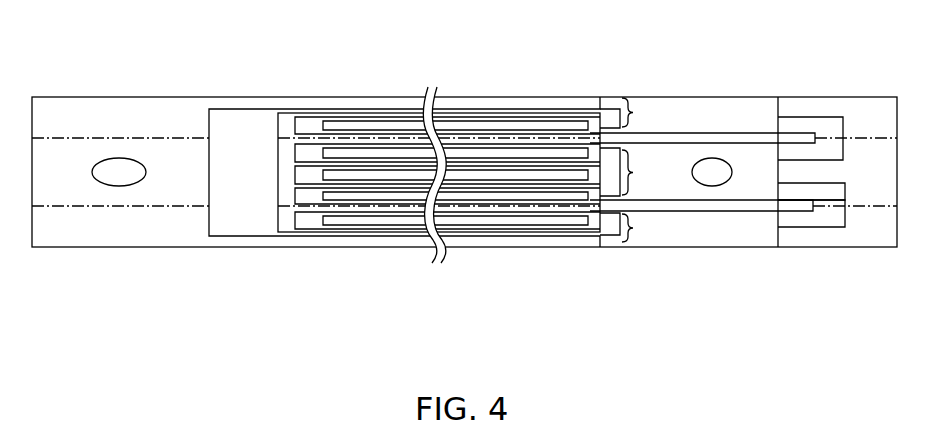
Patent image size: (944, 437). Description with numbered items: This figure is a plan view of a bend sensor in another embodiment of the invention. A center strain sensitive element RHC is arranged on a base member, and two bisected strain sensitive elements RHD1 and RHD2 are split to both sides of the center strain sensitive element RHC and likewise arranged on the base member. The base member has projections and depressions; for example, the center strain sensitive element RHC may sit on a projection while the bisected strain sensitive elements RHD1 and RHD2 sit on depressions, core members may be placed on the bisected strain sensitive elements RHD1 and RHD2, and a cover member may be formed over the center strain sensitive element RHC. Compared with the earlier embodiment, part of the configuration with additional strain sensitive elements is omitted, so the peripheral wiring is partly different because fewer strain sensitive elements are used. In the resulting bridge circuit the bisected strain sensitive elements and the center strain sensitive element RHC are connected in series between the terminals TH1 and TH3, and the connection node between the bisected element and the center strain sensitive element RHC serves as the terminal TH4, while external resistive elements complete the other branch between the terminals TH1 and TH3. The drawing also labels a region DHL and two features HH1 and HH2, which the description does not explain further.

The heater layer / dielectric heater layer boundary DHL is at (208, 132).
The second hole HH2 is at (119, 158).
The first hole HH1 is at (713, 158).
The bisected strain sensitive element RHD1 is at (525, 53).
The center strain sensitive element RHC is at (578, 283).
The bisected strain sensitive element RHD2 is at (497, 283).
The terminal TH4 is at (815, 122).
The terminal TH3 is at (832, 194).
The terminal TH1 is at (805, 218).